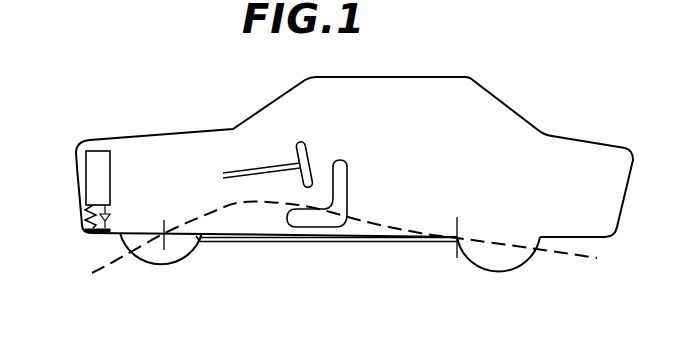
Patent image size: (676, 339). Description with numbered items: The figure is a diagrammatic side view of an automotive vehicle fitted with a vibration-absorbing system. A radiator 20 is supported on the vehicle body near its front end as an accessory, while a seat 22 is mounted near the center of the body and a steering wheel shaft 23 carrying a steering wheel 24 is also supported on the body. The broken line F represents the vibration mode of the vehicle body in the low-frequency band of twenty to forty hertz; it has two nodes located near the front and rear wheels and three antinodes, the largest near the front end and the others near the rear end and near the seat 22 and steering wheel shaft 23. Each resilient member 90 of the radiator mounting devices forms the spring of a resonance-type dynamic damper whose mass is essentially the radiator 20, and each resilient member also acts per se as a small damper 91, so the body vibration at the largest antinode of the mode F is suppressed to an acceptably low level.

The radiator 20 is at (95, 163).
The resilient member 90 is at (90, 207).
The small damper 91 is at (122, 217).
The steering wheel shaft 23 is at (262, 168).
The steering wheel 24 is at (308, 146).
The seat 22 is at (348, 177).
The vibration mode F is at (582, 260).